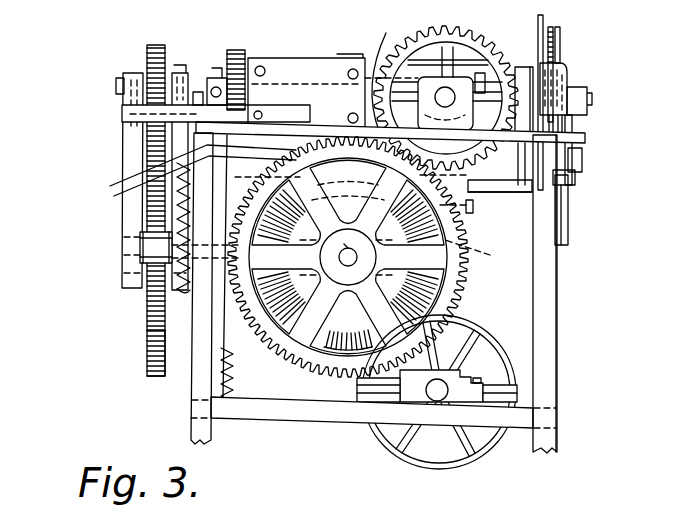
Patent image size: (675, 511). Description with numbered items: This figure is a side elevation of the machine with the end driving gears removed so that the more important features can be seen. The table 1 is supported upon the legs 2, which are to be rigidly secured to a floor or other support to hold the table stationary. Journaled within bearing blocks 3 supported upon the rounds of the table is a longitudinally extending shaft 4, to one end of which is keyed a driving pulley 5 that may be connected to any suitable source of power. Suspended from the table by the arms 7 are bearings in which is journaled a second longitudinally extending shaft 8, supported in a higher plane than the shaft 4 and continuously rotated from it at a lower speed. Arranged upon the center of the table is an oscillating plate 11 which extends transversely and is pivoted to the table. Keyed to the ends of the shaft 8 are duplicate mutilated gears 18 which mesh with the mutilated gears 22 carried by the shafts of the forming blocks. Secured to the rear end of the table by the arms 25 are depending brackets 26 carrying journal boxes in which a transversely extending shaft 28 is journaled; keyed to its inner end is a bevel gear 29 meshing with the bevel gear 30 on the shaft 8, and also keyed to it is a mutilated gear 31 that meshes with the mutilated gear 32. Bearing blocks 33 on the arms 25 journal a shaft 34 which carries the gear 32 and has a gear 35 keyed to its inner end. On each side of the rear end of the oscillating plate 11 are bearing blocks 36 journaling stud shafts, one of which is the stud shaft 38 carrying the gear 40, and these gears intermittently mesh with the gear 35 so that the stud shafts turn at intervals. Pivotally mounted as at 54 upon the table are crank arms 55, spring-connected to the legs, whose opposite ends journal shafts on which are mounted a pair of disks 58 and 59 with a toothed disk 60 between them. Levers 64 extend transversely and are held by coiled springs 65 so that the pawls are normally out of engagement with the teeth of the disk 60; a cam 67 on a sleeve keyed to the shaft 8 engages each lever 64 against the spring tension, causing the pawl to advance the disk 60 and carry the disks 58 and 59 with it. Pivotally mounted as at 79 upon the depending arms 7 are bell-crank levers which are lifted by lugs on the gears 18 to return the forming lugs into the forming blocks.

The table 1 is at (560, 137).
The legs 2 is at (551, 338).
The bearing blocks 3 is at (413, 382).
The shaft 4 is at (437, 400).
The driving pulley 5 is at (480, 446).
The arms 7 is at (348, 200).
The shaft 8 is at (348, 257).
The oscillating plate 11 is at (517, 66).
The mutilated gears 18 is at (285, 351).
The mutilated gear 22 is at (468, 42).
The arms 25 is at (127, 116).
The depending brackets 26 is at (132, 170).
The shaft 28 is at (138, 258).
The bevel gear 29 is at (241, 334).
The bevel gear 30 is at (348, 270).
The mutilated gear 31 is at (146, 342).
The mutilated gear 32 is at (157, 46).
The bearing blocks 33 is at (118, 90).
The shaft 34 is at (182, 72).
The gear 35 is at (241, 52).
The bearing blocks 36 is at (306, 91).
The stud shaft 38 is at (372, 75).
The gear 40 is at (228, 98).
The pivot 54 is at (583, 162).
The crank arms 55 is at (569, 212).
The disk 58 is at (561, 36).
The disk 59 is at (545, 30).
The disk 60 is at (568, 57).
The levers 64 is at (508, 193).
The coiled springs 65 is at (190, 292).
The cam 67 is at (478, 253).
The pivot 79 is at (474, 211).